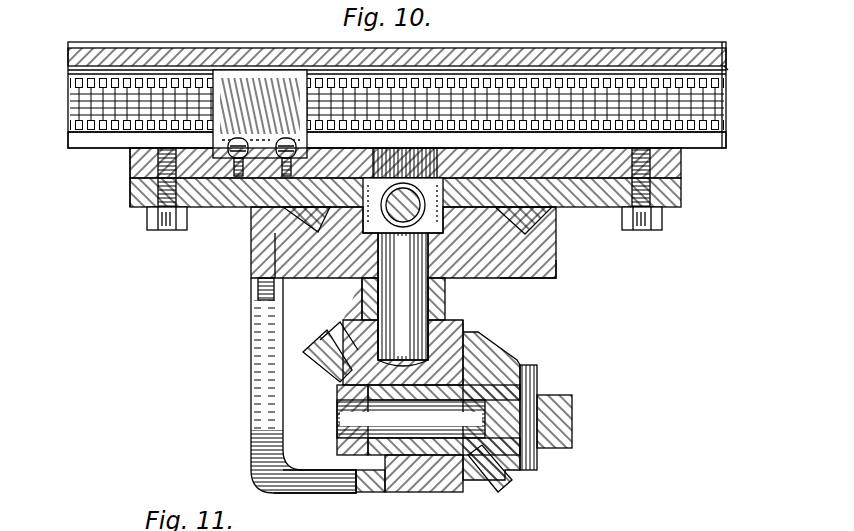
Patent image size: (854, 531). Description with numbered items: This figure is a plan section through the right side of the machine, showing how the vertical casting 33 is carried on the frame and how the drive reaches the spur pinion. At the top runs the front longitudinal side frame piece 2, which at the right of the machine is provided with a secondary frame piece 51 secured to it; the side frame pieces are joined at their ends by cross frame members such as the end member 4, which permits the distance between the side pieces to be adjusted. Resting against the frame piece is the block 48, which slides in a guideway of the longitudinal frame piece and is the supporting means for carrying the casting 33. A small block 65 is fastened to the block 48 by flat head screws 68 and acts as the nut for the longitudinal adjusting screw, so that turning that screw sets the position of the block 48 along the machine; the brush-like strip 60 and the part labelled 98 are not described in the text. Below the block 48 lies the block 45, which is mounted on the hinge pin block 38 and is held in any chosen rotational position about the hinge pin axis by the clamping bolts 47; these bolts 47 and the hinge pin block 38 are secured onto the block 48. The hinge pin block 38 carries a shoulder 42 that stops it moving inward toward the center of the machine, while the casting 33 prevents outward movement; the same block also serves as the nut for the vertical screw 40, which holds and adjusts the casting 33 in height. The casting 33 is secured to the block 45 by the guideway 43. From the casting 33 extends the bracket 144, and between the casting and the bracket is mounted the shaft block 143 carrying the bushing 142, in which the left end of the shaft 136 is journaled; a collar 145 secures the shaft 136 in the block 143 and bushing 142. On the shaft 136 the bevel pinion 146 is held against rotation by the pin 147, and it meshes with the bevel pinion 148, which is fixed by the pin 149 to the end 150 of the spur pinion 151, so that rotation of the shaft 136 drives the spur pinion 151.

The longitudinal side frame piece 2 is at (68, 50).
The bristle brush strip 60 is at (70, 105).
The secondary frame piece 51 is at (72, 140).
The small block 65 is at (216, 70).
The flat head screw 68 is at (282, 178).
The block 48 is at (681, 165).
The plate 98 is at (130, 165).
The block 45 is at (681, 195).
The cross frame member 4 is at (130, 200).
The clamping bolt 47 is at (154, 232).
The hinge pin block 38 is at (405, 163).
The shoulder 42 is at (442, 180).
The guideway 43 is at (558, 235).
The vertical casting 33 is at (558, 270).
The vertical screw 40 is at (378, 236).
The shaft block 143 is at (392, 510).
The spur pinion 151 is at (446, 300).
The bevel pinion 148 is at (470, 330).
The pin 149 is at (305, 354).
The bevel pinion 146 is at (512, 362).
The pin 147 is at (537, 378).
The collar 145 is at (337, 390).
The bracket 144 is at (340, 493).
The end of spur pinion 150 is at (411, 419).
The shaft 136 is at (562, 420).
The bushing 142 is at (472, 470).